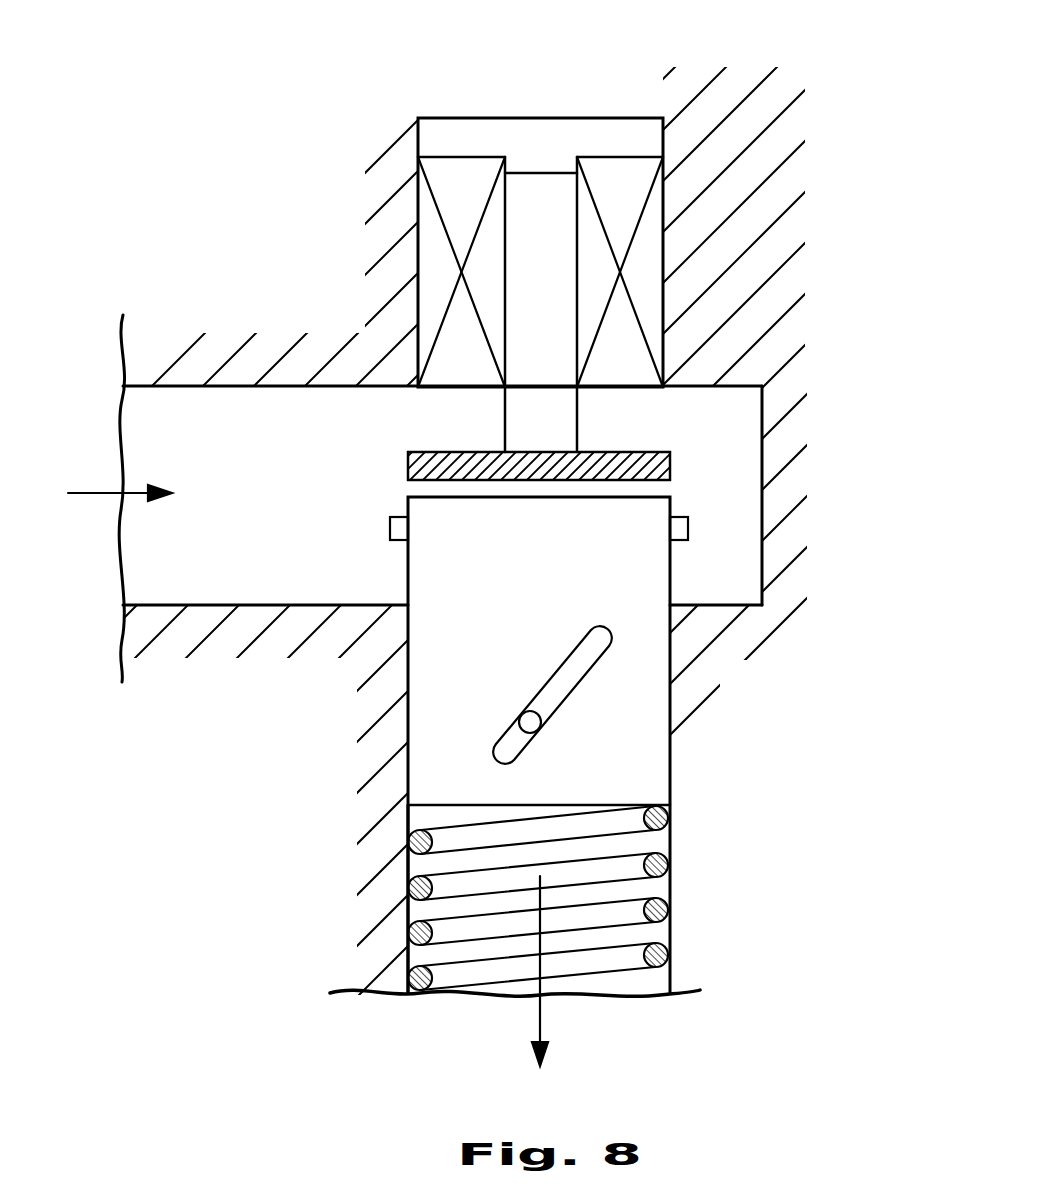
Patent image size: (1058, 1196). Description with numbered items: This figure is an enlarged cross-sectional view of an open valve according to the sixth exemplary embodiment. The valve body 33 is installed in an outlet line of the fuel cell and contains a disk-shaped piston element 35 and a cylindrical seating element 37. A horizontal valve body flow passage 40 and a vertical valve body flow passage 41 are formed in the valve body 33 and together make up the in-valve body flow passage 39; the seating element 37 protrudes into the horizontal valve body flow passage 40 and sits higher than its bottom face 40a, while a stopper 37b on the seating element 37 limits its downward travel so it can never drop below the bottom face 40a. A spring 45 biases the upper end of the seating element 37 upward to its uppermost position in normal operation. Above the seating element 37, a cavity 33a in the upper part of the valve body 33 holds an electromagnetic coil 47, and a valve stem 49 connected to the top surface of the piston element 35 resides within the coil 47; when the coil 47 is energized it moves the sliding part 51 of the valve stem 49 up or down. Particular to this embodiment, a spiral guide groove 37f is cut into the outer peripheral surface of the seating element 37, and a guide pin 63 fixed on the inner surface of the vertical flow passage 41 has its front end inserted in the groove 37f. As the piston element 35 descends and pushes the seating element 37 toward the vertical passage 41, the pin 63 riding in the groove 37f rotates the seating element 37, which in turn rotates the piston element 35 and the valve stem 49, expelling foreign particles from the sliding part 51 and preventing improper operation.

The valve body 33 is at (341, 725).
The cavity 33a is at (422, 188).
The valve stem 49 is at (548, 185).
The electromagnetic coil 47 is at (630, 208).
The sliding part 51 is at (505, 263).
The piston element 35 is at (668, 470).
The seating element 37 is at (679, 504).
The stopper 37b is at (688, 530).
The guide groove 37f is at (598, 643).
The guide pin 63 is at (535, 716).
The spring 45 is at (660, 865).
The in-valve body flow passage 39 is at (290, 790).
The horizontal valve body flow passage 40 is at (263, 588).
The vertical valve body flow passage 41 is at (458, 860).
The bottom face 40a is at (183, 605).